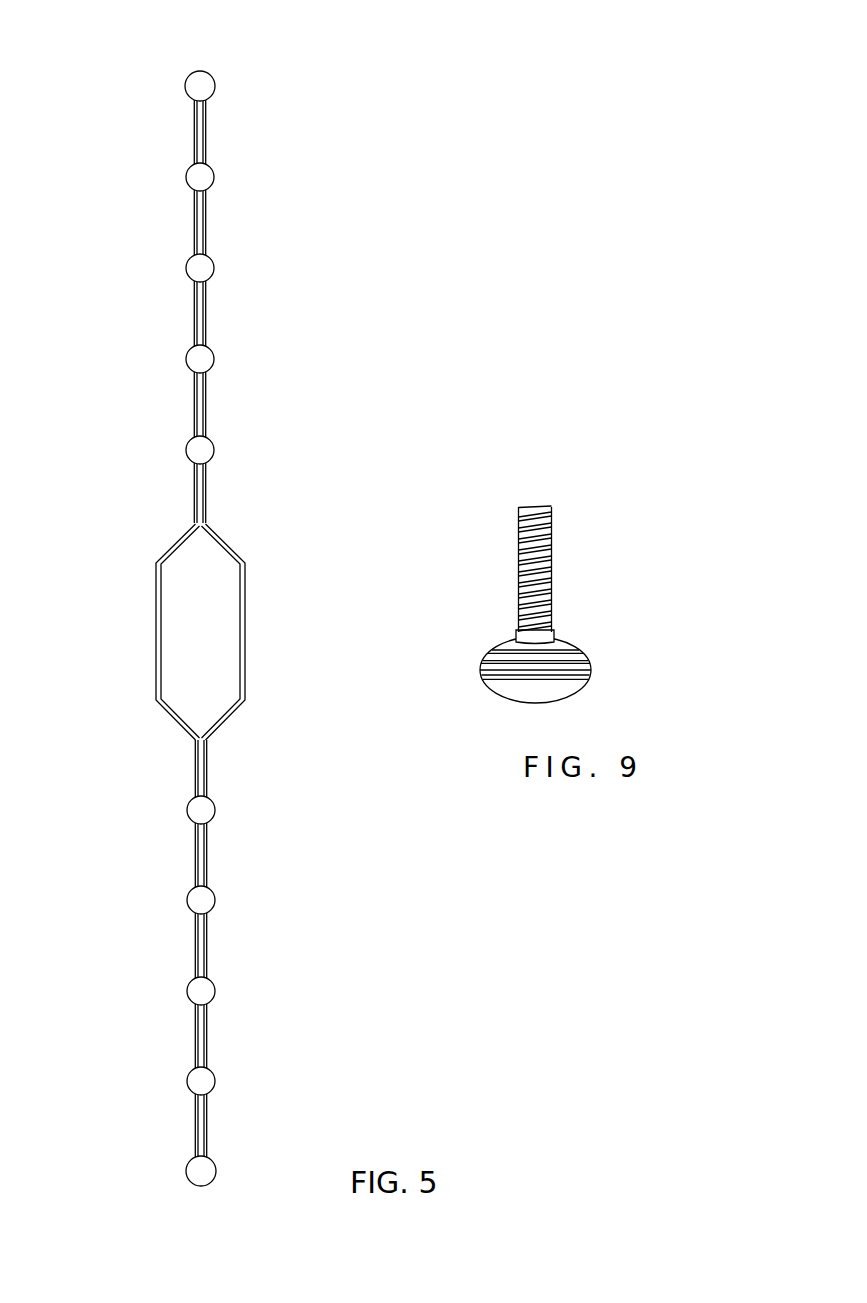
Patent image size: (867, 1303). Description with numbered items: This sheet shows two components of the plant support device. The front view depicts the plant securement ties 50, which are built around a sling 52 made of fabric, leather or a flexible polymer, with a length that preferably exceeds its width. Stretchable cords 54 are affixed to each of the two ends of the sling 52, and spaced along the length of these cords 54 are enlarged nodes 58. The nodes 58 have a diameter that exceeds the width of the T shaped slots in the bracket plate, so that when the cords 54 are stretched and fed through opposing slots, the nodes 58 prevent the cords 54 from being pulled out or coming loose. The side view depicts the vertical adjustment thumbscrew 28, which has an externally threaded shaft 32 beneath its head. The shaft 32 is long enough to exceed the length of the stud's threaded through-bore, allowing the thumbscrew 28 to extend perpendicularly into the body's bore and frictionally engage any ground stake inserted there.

In FIG. 5, the plant securement ties 50 is at (185, 628).
In FIG. 5, the sling 52 is at (218, 567).
In FIG. 5, the stretchable cords 54 is at (207, 220).
In FIG. 5, the enlarged nodes 58 is at (203, 270).
In FIG. 9, the vertical adjustment thumbscrew 28 is at (512, 690).
In FIG. 9, the externally threaded shaft 32 is at (553, 550).